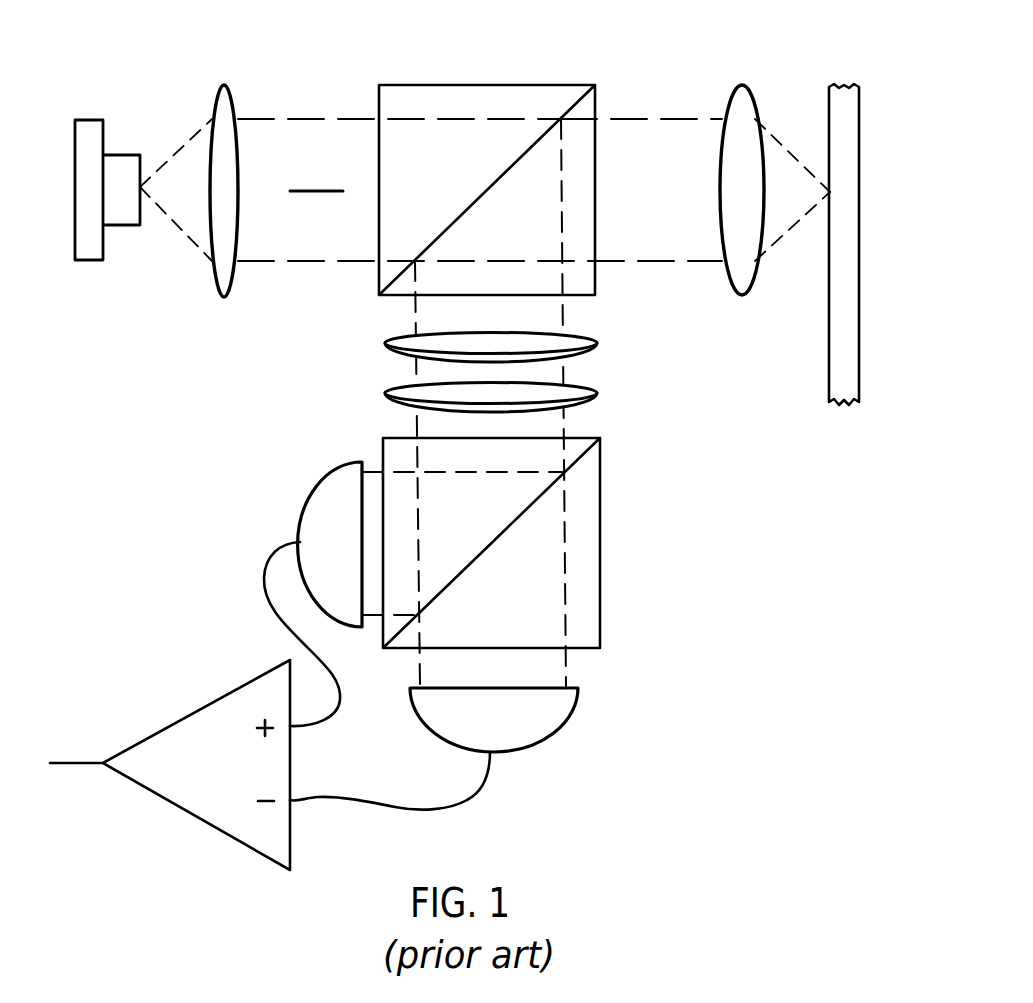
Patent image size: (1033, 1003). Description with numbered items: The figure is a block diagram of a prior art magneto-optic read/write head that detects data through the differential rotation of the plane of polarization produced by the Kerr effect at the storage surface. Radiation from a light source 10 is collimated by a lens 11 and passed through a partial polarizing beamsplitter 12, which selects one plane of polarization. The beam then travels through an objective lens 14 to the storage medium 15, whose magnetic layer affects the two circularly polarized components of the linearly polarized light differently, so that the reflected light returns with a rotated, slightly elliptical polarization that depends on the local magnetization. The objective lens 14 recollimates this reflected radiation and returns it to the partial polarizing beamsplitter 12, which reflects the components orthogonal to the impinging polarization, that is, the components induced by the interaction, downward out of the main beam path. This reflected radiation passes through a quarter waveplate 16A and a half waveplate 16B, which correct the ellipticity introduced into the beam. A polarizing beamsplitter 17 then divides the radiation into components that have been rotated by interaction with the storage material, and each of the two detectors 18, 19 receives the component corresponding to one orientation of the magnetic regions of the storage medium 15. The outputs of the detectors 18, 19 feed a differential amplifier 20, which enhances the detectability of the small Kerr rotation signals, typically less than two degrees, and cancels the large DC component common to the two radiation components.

The light source 10 is at (93, 120).
The lens 11 is at (223, 85).
The partial polarizing beamsplitter 12 is at (483, 85).
The objective lens 14 is at (740, 85).
The storage medium 15 is at (843, 86).
The quarter waveplate 16A is at (597, 343).
The half waveplate 16B is at (597, 392).
The polarizing beamsplitter 17 is at (600, 540).
The detector 18 is at (312, 492).
The detector 19 is at (565, 723).
The differential amplifier 20 is at (222, 692).